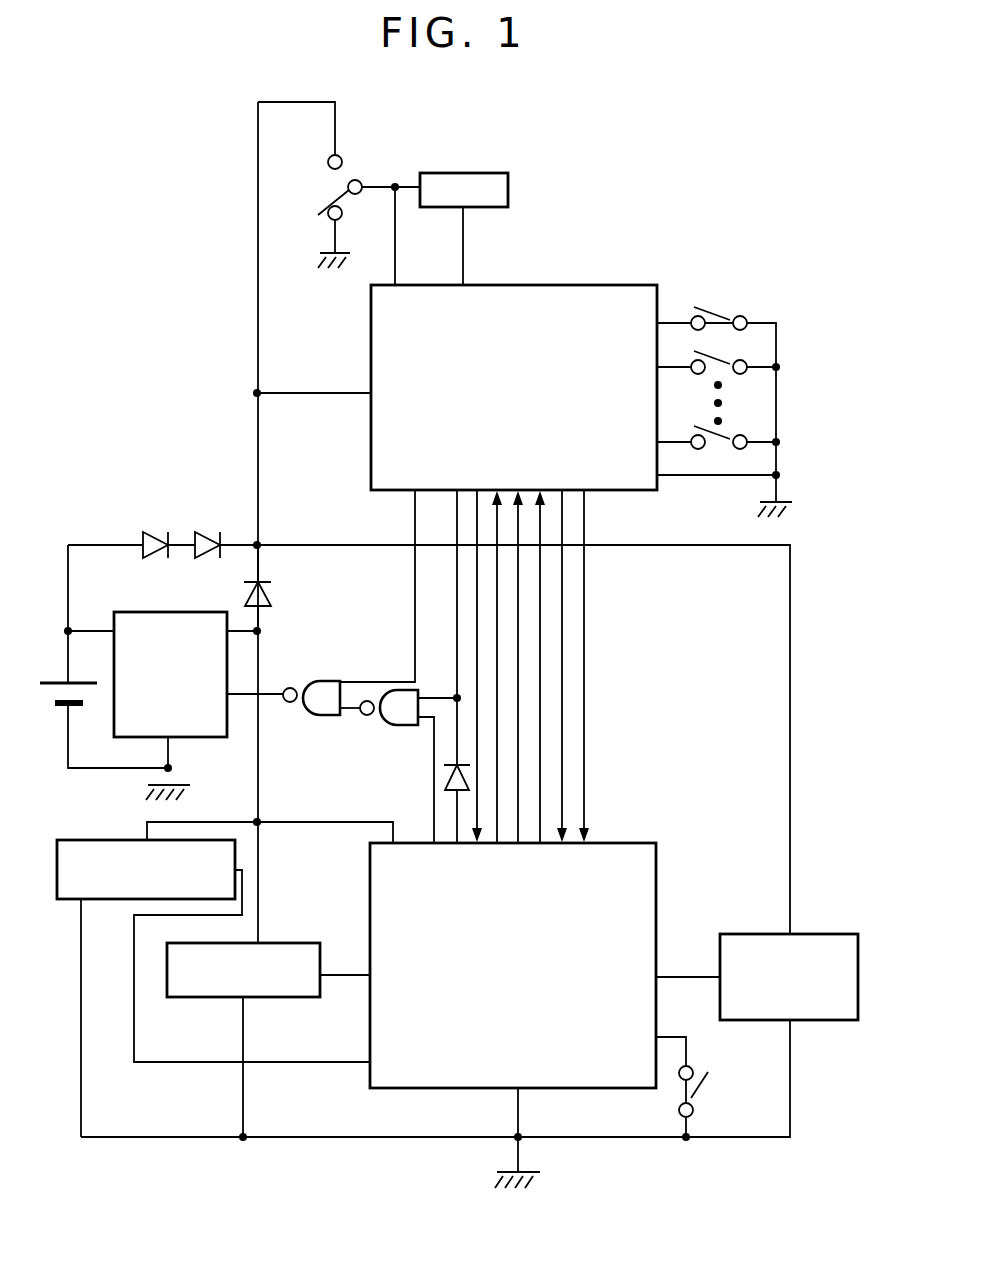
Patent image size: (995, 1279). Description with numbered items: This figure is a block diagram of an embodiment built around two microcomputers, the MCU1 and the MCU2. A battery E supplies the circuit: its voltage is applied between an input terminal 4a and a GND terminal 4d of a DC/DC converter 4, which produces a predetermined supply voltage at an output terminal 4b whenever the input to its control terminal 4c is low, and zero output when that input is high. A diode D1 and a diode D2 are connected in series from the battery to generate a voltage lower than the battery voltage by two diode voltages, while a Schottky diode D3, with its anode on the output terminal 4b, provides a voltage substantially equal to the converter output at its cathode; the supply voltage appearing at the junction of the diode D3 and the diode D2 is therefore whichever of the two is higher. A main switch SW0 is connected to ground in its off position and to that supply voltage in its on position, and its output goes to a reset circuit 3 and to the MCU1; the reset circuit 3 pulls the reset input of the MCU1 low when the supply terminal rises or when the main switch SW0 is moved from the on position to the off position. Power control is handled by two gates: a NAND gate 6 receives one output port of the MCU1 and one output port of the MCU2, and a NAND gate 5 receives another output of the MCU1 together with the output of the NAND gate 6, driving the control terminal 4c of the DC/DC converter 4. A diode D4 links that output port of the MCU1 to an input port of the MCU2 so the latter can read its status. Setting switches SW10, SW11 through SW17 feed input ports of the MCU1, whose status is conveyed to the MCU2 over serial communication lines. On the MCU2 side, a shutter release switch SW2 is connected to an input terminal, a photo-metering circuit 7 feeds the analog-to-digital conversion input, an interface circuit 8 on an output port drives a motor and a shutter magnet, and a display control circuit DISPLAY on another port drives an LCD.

The reset circuit 3 is at (508, 173).
The DC/DC converter 4 is at (170, 690).
The input terminal 4a is at (137, 632).
The output terminal 4b is at (205, 632).
The control terminal 4c is at (204, 695).
The GND terminal 4d is at (197, 737).
The NAND gate 5 is at (313, 681).
The NAND gate 6 is at (395, 725).
The photo-metering circuit 7 is at (100, 840).
The interface circuit 8 is at (272, 943).
The microcomputer MCU1 is at (477, 372).
The microcomputer MCU2 is at (474, 960).
The main switch SW0 is at (355, 170).
The shutter release switch SW2 is at (719, 1093).
The setting switch SW10 is at (769, 325).
The setting switch SW11 is at (771, 369).
The setting switch SW17 is at (769, 444).
The diode D1 is at (150, 525).
The diode D2 is at (205, 525).
The Schottky diode D3 is at (279, 595).
The diode D4 is at (438, 778).
The battery E is at (67, 712).
The display control circuit DISPLAY is at (789, 977).